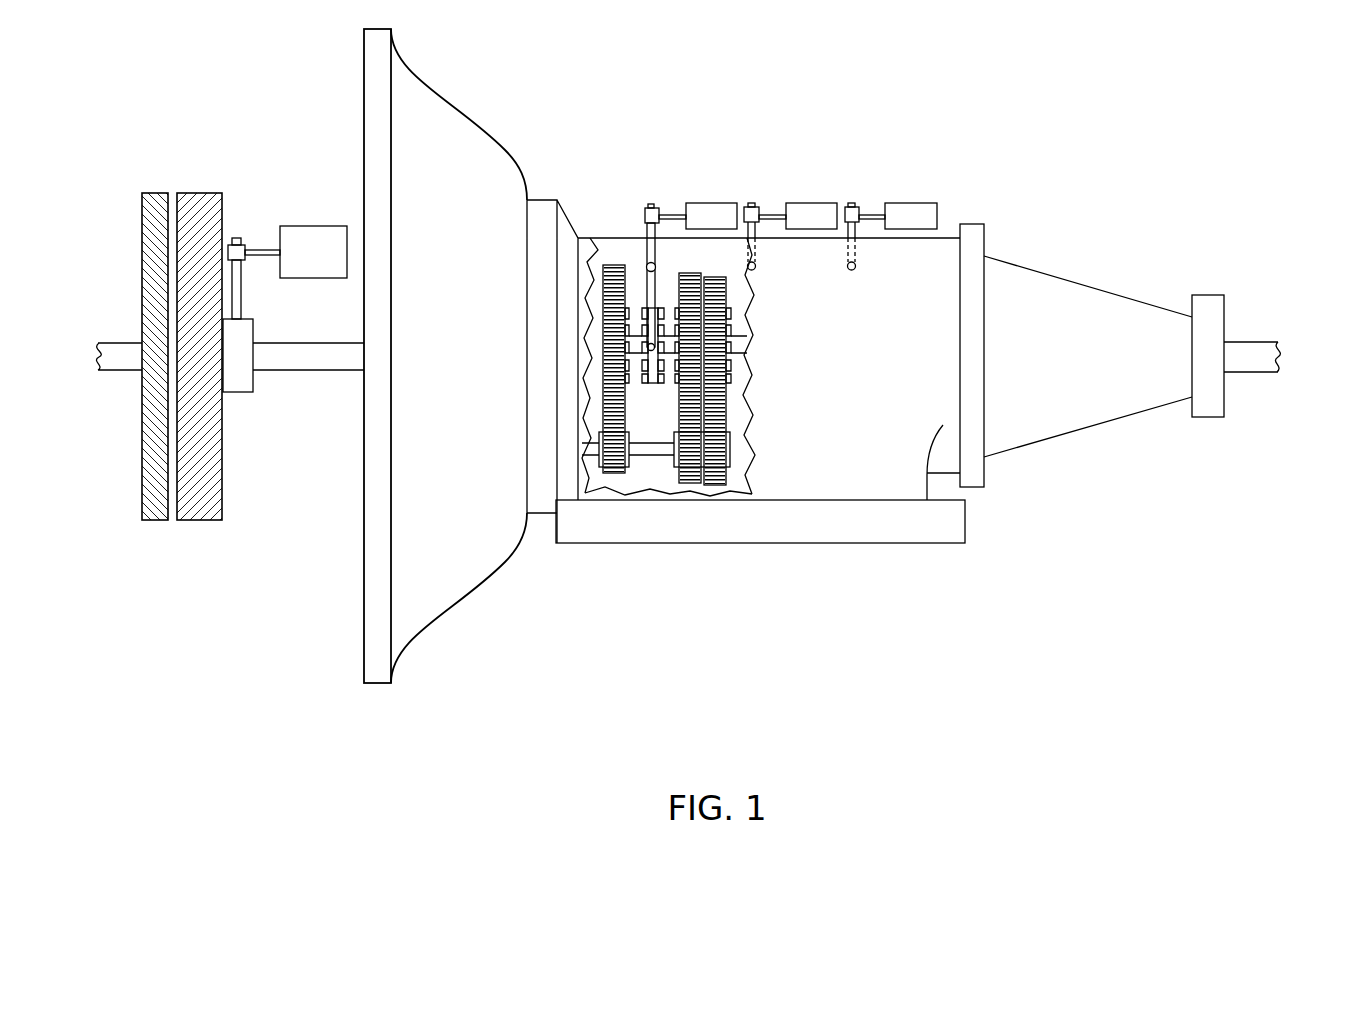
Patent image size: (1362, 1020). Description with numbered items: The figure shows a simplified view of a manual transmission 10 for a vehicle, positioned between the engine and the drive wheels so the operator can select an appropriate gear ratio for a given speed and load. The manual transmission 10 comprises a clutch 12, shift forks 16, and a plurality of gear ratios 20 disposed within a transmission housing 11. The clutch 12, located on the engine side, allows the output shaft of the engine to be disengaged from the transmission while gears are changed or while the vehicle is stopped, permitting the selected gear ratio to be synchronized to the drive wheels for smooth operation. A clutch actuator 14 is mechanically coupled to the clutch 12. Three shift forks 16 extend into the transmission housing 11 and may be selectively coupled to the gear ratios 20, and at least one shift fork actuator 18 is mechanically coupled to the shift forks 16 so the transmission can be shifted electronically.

The manual transmission 10 is at (699, 354).
The transmission housing 11 is at (944, 359).
The clutch 12 is at (232, 523).
The clutch actuator 14 is at (301, 264).
The shift forks 16 is at (647, 232).
The shift fork actuator 18 is at (913, 203).
The gear ratios 20 is at (613, 486).